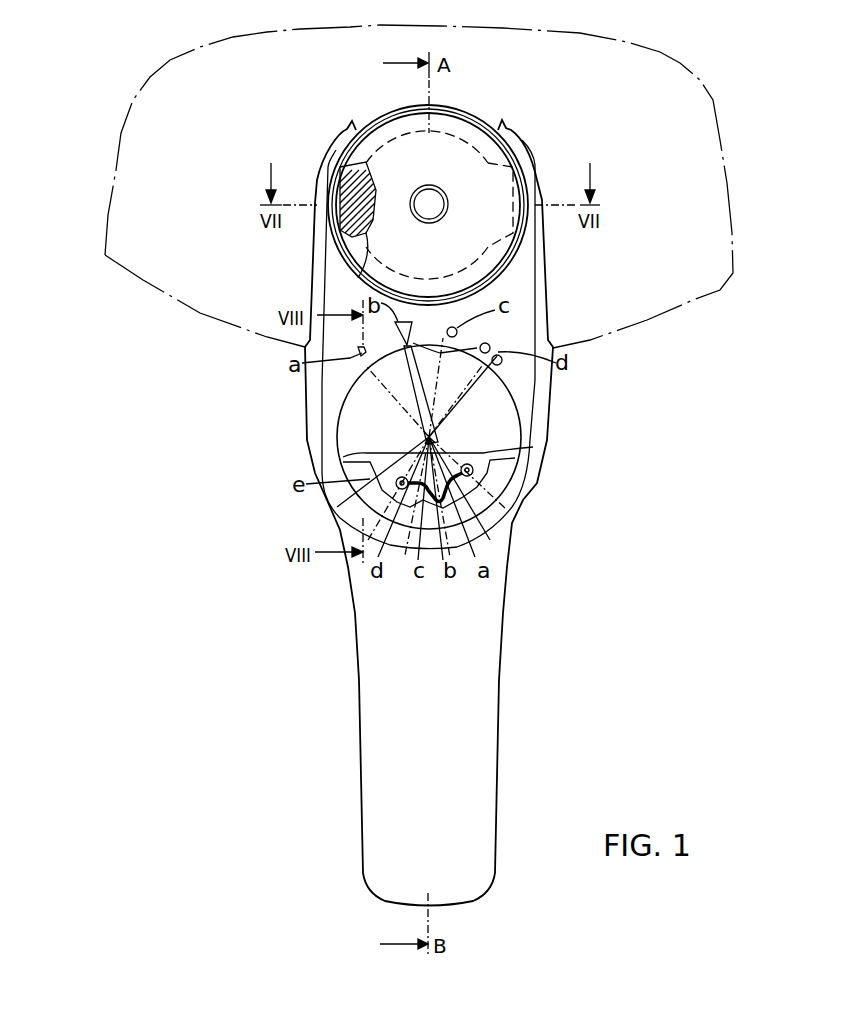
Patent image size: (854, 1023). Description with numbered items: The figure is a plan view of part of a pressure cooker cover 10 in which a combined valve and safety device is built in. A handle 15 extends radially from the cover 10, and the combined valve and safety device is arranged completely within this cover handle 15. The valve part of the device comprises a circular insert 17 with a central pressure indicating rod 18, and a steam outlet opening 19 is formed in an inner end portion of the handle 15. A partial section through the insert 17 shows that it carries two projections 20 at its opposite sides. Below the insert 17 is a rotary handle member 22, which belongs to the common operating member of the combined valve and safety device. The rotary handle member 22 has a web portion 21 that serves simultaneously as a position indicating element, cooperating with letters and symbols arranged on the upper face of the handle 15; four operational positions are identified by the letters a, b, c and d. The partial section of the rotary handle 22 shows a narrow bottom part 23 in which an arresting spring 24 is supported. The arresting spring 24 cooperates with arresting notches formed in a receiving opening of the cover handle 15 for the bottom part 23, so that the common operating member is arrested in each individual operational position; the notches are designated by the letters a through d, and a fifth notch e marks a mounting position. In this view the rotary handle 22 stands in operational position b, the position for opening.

The cover 10 is at (683, 267).
The handle 15 is at (480, 670).
The circular insert 17 is at (490, 255).
The central pressure indicating rod 18 is at (434, 200).
The steam outlet opening 19 is at (370, 125).
The projections 20 is at (350, 184).
The web portion 21 is at (425, 398).
The rotary handle member 22 is at (495, 435).
The narrow bottom part 23 is at (382, 457).
The arresting spring 24 is at (483, 484).